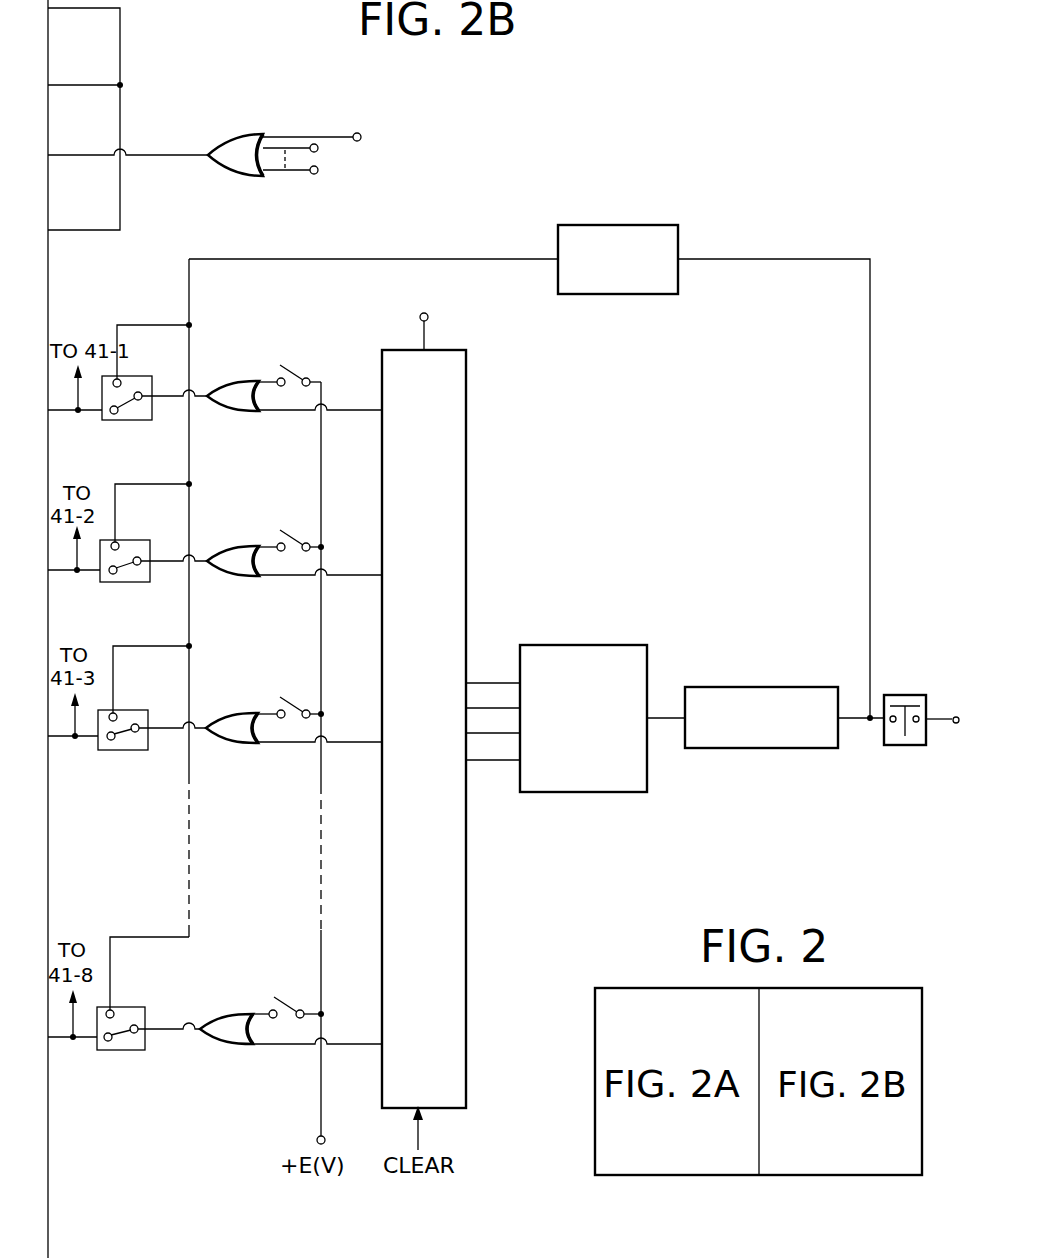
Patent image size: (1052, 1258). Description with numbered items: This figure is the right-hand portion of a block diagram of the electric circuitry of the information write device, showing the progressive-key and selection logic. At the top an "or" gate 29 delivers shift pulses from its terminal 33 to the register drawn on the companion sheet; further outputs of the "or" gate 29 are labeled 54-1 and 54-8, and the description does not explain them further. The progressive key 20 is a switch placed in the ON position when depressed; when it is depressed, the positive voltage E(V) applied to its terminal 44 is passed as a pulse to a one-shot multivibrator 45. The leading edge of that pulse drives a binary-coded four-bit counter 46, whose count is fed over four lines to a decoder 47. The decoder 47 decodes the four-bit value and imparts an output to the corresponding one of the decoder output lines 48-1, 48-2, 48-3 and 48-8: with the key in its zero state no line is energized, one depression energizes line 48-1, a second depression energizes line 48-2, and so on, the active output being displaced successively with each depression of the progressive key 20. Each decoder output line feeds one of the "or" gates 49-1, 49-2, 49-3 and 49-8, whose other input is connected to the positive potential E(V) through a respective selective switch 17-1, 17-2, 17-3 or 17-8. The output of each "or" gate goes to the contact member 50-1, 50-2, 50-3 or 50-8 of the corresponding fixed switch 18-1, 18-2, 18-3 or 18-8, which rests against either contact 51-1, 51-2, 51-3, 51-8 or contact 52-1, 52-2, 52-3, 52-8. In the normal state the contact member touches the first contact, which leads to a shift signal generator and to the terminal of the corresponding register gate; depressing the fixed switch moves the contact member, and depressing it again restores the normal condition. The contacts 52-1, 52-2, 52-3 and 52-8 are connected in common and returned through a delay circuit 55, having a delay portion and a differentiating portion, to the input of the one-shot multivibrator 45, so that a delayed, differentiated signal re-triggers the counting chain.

The "or" gate 29 is at (240, 134).
The terminal 33 is at (360, 134).
The terminal 54-1 is at (318, 150).
The terminal 54-8 is at (318, 173).
The delay circuit 55 is at (628, 225).
The decoder 47 is at (468, 868).
The binary-coded 4-bit counter 46 is at (582, 645).
The one-shot multivibrator 45 is at (752, 687).
The progressive key 20 is at (900, 695).
The terminal 44 is at (957, 724).
The fixed switch 18-1 is at (122, 420).
The fixed switch 18-2 is at (120, 582).
The fixed switch 18-3 is at (118, 750).
The fixed switch 18-8 is at (117, 1050).
The contact 52-1 is at (120, 379).
The contact 52-2 is at (118, 542).
The contact 52-3 is at (116, 712).
The contact 52-8 is at (113, 1010).
The contact 51-1 is at (112, 414).
The contact 51-2 is at (111, 574).
The contact 51-3 is at (109, 740).
The contact 51-8 is at (106, 1041).
The contact member 50-1 is at (126, 403).
The contact member 50-2 is at (124, 565).
The contact member 50-3 is at (122, 732).
The contact member 50-8 is at (120, 1033).
The "or" gate 49-1 is at (238, 381).
The "or" gate 49-2 is at (238, 546).
The "or" gate 49-3 is at (236, 713).
The "or" gate 49-8 is at (232, 1014).
The selective switch 17-1 is at (281, 365).
The selective switch 17-2 is at (281, 530).
The selective switch 17-3 is at (281, 697).
The selective switch 17-8 is at (284, 997).
The decoder output line 48-1 is at (350, 410).
The decoder output line 48-2 is at (350, 575).
The decoder output line 48-3 is at (350, 742).
The decoder output line 48-8 is at (348, 1044).